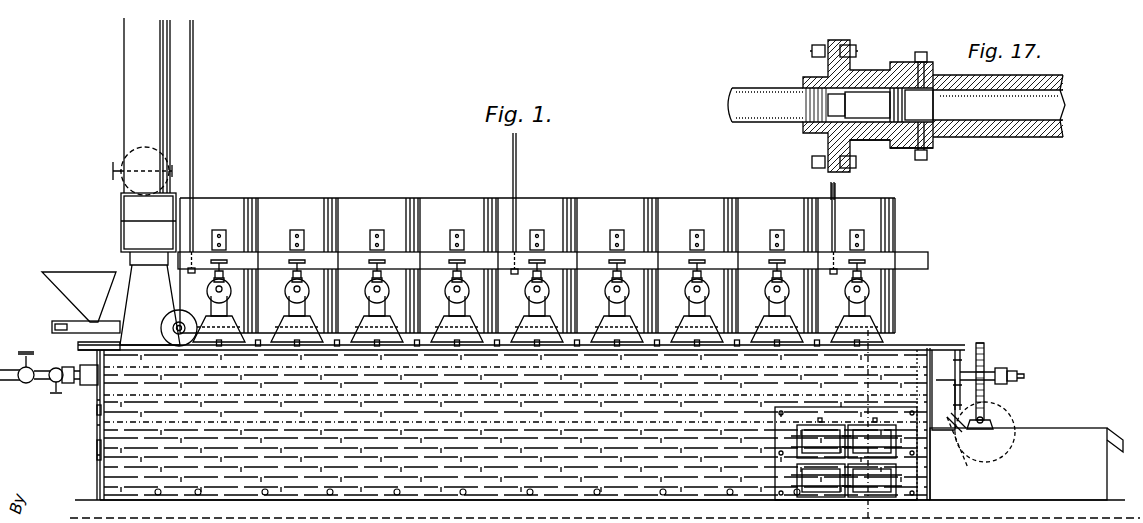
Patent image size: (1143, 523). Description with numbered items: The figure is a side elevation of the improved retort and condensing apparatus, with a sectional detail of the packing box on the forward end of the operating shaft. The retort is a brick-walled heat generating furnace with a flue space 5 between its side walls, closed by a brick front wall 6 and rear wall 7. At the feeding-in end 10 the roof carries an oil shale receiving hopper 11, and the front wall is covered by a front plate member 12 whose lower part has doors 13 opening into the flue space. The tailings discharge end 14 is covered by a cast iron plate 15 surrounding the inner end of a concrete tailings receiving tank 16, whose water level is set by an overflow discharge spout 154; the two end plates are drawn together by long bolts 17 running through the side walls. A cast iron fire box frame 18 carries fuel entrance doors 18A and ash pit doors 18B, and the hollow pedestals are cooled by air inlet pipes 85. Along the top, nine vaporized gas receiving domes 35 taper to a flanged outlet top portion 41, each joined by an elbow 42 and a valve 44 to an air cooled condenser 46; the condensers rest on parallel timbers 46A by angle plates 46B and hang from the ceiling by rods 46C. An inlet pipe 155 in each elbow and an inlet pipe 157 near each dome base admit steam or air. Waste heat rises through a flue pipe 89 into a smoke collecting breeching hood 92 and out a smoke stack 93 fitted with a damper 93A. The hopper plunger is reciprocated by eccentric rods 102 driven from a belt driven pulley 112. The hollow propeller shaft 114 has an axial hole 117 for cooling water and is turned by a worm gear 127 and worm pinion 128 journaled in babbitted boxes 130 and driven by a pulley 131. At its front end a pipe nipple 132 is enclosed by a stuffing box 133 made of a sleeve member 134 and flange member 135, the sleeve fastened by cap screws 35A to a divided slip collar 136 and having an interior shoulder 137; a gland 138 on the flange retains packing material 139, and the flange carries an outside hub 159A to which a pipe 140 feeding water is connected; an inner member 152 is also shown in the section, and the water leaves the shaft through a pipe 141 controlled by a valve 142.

In FIG. 1, the flue space 5 is at (857, 230).
In FIG. 1, the front wall 6 is at (100, 413).
In FIG. 1, the rear wall 7 is at (932, 358).
In FIG. 1, the feeding-in end 10 is at (95, 299).
In FIG. 1, the oil shale receiving hopper 11 is at (58, 281).
In FIG. 1, the front plate member 12 is at (97, 436).
In FIG. 1, the doors 13 is at (97, 458).
In FIG. 1, the tailings discharge end 14 is at (991, 332).
In FIG. 1, the cast iron plate 15 is at (956, 358).
In FIG. 1, the tailings receiving tank 16 is at (1018, 464).
In FIG. 1, the long bolts 17 is at (562, 422).
In FIG. 1, the fire box frame 18 is at (846, 425).
In FIG. 1, the fuel entrance doors 18A is at (865, 428).
In FIG. 1, the ash pit doors 18B is at (846, 509).
In FIG. 1, the vaporized gas receiving domes 35 is at (521, 339).
In FIG. 17, the cap screws 35A is at (921, 52).
In FIG. 1, the flanged outlet top portion 41 is at (364, 318).
In FIG. 1, the elbow 42 is at (289, 304).
In FIG. 1, the valve 44 is at (228, 272).
In FIG. 1, the air cooled condenser 46 is at (352, 198).
In FIG. 1, the parallel timbers 46A is at (929, 262).
In FIG. 1, the angle plates 46B is at (371, 232).
In FIG. 1, the rods 46C is at (194, 125).
In FIG. 17, the rods 46C is at (817, 189).
In FIG. 1, the air inlet pipes 85 is at (460, 496).
In FIG. 1, the flue pipe 89 is at (150, 298).
In FIG. 1, the smoke collecting breeching hood 92 is at (148, 222).
In FIG. 1, the smoke stack 93 is at (124, 84).
In FIG. 1, the damper 93A is at (126, 160).
In FIG. 1, the eccentric rods 102 is at (100, 321).
In FIG. 1, the belt driven pulley 112 is at (161, 330).
In FIG. 17, the propeller shaft 114 is at (1030, 140).
In FIG. 17, the axial hole 117 is at (999, 106).
In FIG. 1, the worm gear 127 is at (985, 355).
In FIG. 1, the worm pinion 128 is at (990, 428).
In FIG. 1, the babbitted boxes 130 is at (985, 432).
In FIG. 1, the pulley 131 is at (49, 366).
In FIG. 1, the pipe nipple 132 is at (48, 384).
In FIG. 1, the stuffing box 133 is at (64, 386).
In FIG. 17, the stuffing box 133 is at (856, 166).
In FIG. 17, the sleeve member 134 is at (860, 60).
In FIG. 1, the flange member 135 is at (60, 366).
In FIG. 17, the flange member 135 is at (826, 78).
In FIG. 17, the divided slip collar 136 is at (935, 136).
In FIG. 17, the interior shoulder 137 is at (900, 68).
In FIG. 17, the gland 138 is at (872, 148).
In FIG. 17, the packing material 139 is at (905, 150).
In FIG. 17, the pipe 140 is at (750, 95).
In FIG. 1, the pipe 141 is at (998, 372).
In FIG. 1, the valve 142 is at (1012, 384).
In FIG. 17, the piston 152 is at (859, 105).
In FIG. 1, the overflow discharge spout 154 is at (1116, 428).
In FIG. 1, the inlet pipe 155 is at (452, 290).
In FIG. 1, the inlet pipe 157 is at (537, 350).
In FIG. 17, the liner 159A is at (803, 132).